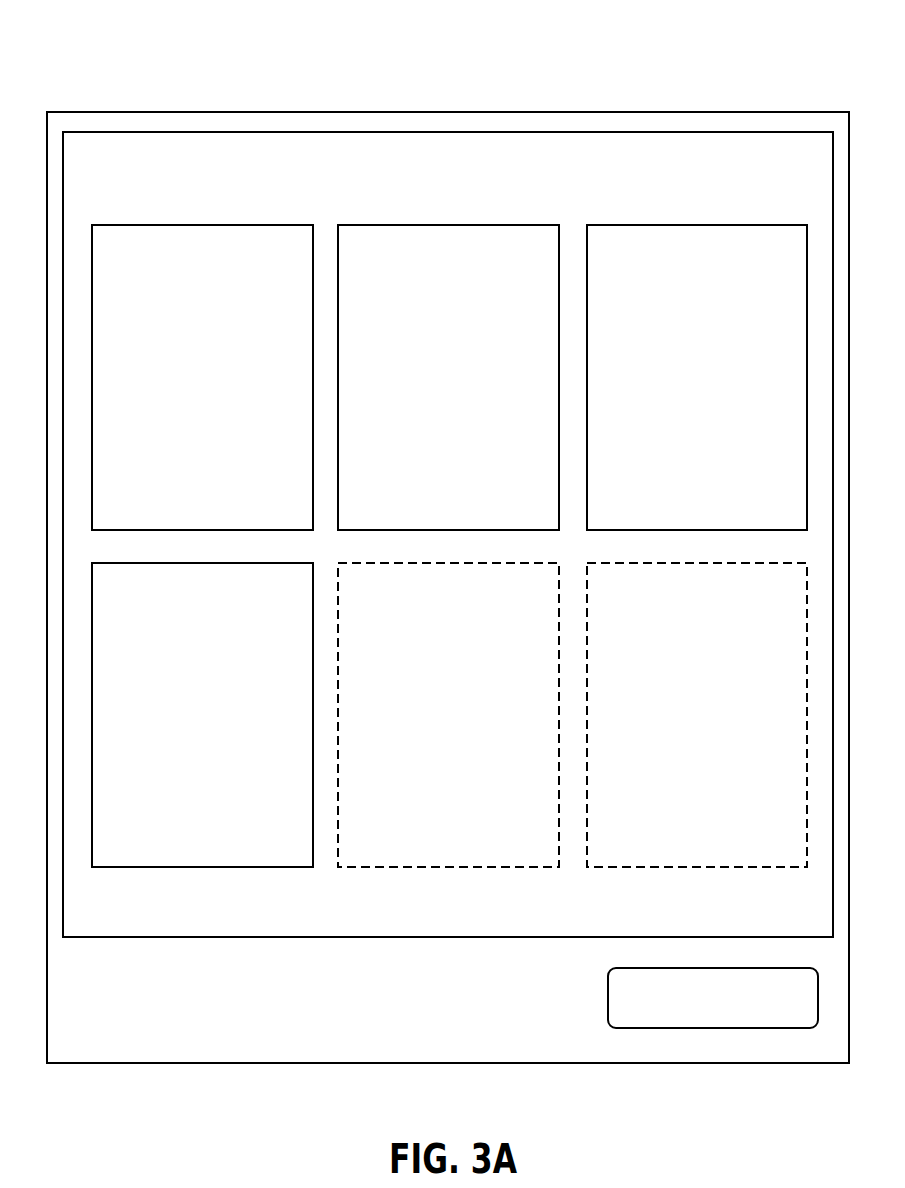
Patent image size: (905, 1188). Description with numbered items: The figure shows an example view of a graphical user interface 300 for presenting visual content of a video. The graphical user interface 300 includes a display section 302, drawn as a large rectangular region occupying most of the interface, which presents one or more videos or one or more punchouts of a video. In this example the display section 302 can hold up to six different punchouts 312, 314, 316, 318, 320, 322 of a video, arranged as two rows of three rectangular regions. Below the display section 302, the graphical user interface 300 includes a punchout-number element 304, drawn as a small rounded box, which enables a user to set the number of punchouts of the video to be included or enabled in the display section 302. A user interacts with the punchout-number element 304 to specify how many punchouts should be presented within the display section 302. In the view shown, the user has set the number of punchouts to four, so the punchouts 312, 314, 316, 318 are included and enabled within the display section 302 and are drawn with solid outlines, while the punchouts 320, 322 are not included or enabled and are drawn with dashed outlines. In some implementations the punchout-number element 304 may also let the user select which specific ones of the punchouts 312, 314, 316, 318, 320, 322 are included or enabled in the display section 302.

The graphical user interface 300 is at (467, 112).
The display section 302 is at (427, 194).
The punchout-number element 304 is at (608, 1000).
The punchout 312 is at (182, 290).
The punchout 314 is at (428, 290).
The punchout 316 is at (676, 290).
The punchout 318 is at (182, 627).
The punchout 320 is at (428, 627).
The punchout 322 is at (676, 627).